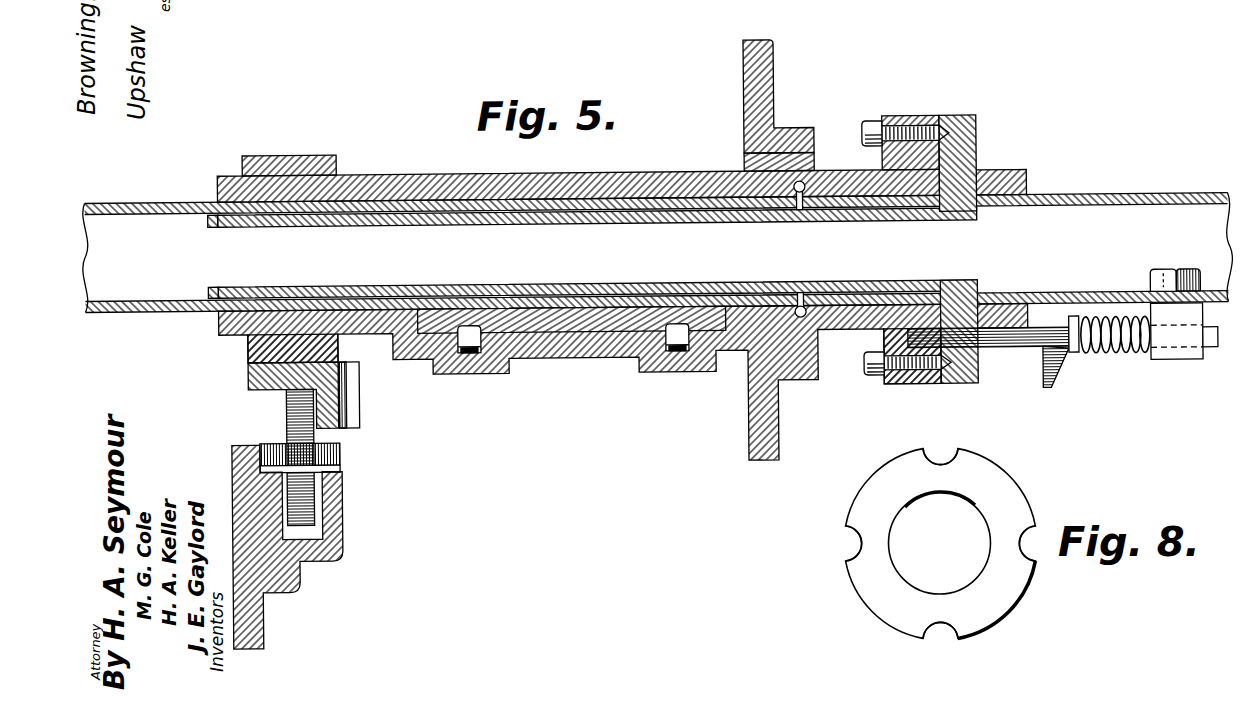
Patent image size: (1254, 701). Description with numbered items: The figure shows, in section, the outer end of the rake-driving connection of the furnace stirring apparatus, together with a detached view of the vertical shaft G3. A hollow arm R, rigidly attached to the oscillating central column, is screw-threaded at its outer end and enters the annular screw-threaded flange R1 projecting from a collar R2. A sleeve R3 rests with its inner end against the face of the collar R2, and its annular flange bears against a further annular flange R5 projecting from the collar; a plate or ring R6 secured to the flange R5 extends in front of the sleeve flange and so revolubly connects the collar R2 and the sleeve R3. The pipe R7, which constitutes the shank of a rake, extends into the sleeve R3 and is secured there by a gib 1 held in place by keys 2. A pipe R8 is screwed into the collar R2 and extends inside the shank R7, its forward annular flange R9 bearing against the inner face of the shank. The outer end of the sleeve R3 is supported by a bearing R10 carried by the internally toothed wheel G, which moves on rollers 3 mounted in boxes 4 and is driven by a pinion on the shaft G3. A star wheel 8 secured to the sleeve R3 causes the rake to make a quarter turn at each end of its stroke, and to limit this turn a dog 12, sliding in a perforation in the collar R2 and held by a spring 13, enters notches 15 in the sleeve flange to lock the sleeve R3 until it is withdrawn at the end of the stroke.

In FIG. 5, the hollow arm R is at (657, 253).
In FIG. 5, the annular screw-threaded flange R1 is at (978, 160).
In FIG. 5, the collar R2 is at (978, 140).
In FIG. 5, the sleeve R3 is at (623, 300).
In FIG. 5, the annular flange R5 is at (952, 113).
In FIG. 5, the plate or ring R6 is at (906, 231).
In FIG. 5, the pipe R7 is at (436, 200).
In FIG. 5, the pipe R8 is at (655, 275).
In FIG. 5, the annular flange R9 is at (200, 256).
In FIG. 5, the bearing R10 is at (300, 152).
In FIG. 5, the gib 1 is at (579, 326).
In FIG. 5, the keys 2 is at (473, 350).
In FIG. 5, the rollers 3 is at (316, 501).
In FIG. 5, the boxes 4 is at (299, 546).
In FIG. 5, the star wheel 8 is at (775, 88).
In FIG. 5, the dog 12 is at (989, 358).
In FIG. 5, the spring 13 is at (1100, 352).
In FIG. 5, the internally toothed wheel G is at (304, 381).
In FIG. 8, the vertical shaft G3 is at (941, 544).
In FIG. 8, the notches 15 is at (937, 544).